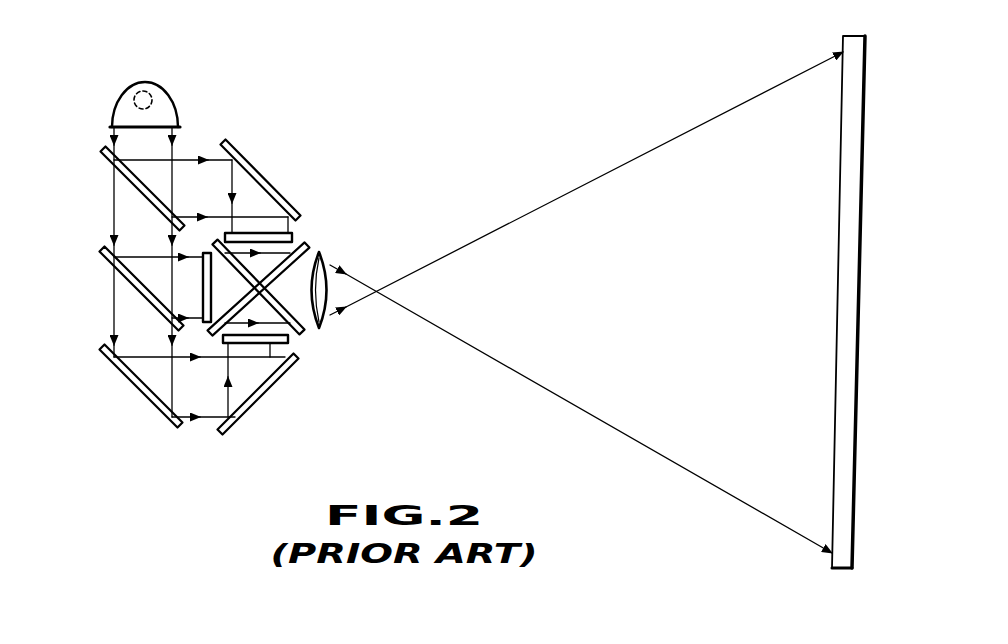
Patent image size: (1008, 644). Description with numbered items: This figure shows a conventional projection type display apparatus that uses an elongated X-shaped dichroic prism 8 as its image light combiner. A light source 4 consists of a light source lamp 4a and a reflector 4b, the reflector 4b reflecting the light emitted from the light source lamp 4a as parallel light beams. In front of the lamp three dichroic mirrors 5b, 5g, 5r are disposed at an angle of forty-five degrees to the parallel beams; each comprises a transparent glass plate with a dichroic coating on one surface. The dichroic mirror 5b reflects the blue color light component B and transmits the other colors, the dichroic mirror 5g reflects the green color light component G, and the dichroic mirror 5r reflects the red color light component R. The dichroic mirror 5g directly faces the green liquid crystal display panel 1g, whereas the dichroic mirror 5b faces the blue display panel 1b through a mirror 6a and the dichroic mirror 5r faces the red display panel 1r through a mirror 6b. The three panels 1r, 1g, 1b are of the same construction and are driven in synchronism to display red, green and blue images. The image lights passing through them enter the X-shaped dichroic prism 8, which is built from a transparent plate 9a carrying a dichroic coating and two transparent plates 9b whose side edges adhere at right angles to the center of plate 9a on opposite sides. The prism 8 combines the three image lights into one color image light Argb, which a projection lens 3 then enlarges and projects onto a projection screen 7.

The light source 4 is at (127, 82).
The light source lamp 4a is at (153, 92).
The reflector 4b is at (125, 113).
The blue color light component B is at (192, 157).
The green color light component G is at (202, 232).
The red color light component R is at (140, 353).
The dichroic mirror 5b is at (106, 159).
The dichroic mirror 5g is at (105, 257).
The dichroic mirror 5r is at (123, 380).
The mirror 6a is at (258, 173).
The mirror 6b is at (260, 398).
The liquid crystal display panel 1b is at (265, 233).
The liquid crystal display panel 1g is at (203, 252).
The liquid crystal display panel 1r is at (266, 345).
The elongated X-shaped dichroic prism 8 is at (280, 295).
The transparent plate 9a is at (306, 328).
The transparent plate 9b is at (306, 249).
The projection lens 3 is at (320, 297).
The color image light Argb is at (645, 448).
The projection screen 7 is at (853, 338).